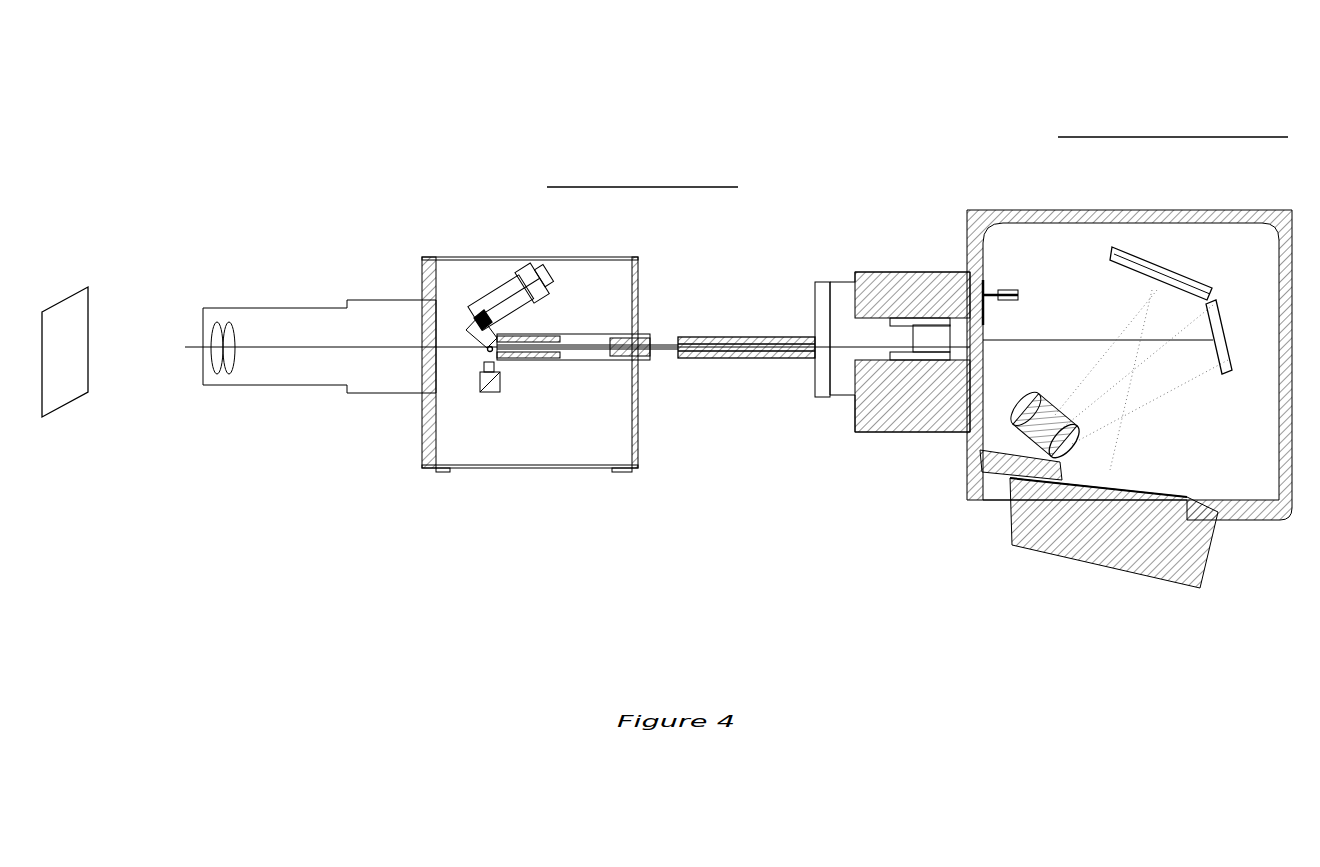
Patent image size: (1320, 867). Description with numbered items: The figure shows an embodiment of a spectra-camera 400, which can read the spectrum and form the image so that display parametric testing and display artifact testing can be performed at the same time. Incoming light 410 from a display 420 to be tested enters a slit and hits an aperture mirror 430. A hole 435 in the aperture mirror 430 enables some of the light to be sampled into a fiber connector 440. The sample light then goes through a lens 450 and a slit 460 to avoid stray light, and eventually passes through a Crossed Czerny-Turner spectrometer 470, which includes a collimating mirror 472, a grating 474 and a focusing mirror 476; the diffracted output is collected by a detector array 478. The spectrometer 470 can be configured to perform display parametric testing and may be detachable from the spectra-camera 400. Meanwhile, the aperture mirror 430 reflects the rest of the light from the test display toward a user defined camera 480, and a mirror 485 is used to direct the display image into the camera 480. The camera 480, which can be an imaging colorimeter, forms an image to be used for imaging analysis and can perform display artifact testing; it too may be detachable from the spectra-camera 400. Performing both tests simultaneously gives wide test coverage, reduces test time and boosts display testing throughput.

The spectra-camera 400 is at (162, 53).
The incoming light 410 is at (168, 346).
The display 420 is at (67, 322).
The aperture mirror 430 is at (482, 395).
The hole 435 is at (487, 350).
The fiber connector 440 is at (667, 330).
The lens 450 is at (893, 432).
The slit 460 is at (980, 283).
The spectrometer 470 is at (1165, 448).
The collimating mirror 472 is at (1193, 271).
The grating 474 is at (1012, 452).
The focusing mirror 476 is at (1112, 248).
The detector array 478 is at (1012, 505).
The user defined camera 480 is at (527, 290).
The mirror 485 is at (468, 322).